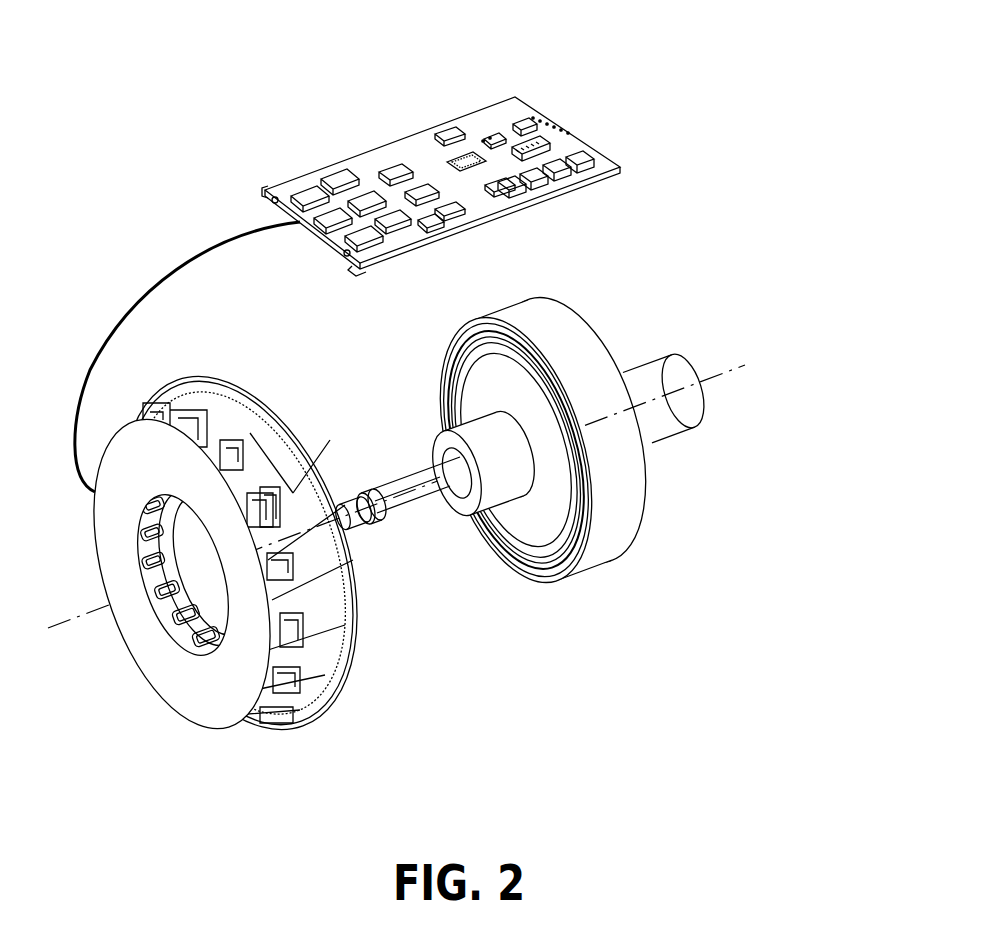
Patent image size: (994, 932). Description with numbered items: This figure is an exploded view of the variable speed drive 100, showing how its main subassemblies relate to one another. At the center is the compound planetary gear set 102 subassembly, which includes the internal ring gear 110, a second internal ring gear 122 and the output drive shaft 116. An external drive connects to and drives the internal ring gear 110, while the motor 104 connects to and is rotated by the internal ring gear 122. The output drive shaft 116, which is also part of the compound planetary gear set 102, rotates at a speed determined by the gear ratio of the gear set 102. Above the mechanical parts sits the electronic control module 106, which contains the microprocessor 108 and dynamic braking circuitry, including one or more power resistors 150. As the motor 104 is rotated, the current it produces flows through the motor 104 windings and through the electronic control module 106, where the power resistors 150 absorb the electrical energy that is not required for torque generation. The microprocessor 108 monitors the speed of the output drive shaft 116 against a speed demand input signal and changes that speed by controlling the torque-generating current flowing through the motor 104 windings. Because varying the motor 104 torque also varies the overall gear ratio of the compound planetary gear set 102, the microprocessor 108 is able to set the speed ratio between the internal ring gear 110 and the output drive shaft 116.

The variable speed drive 100 is at (406, 600).
The compound planetary gear set 102 is at (625, 528).
The motor 104 is at (217, 728).
The electronic control module 106 is at (580, 137).
The microprocessor 108 is at (533, 140).
The internal ring gear 110 is at (685, 417).
The output drive shaft 116 is at (403, 478).
The internal ring gear 122 is at (487, 492).
The power resistor 150 is at (392, 160).